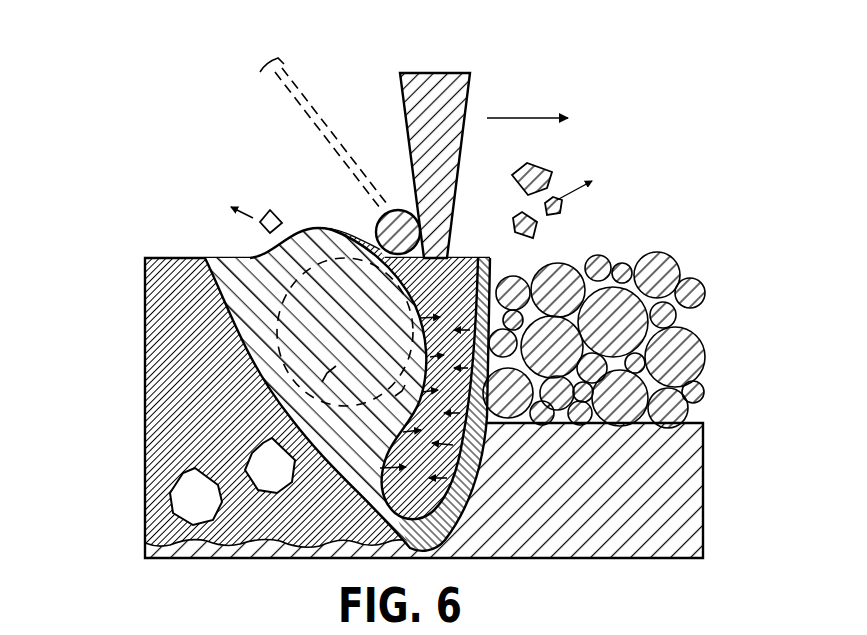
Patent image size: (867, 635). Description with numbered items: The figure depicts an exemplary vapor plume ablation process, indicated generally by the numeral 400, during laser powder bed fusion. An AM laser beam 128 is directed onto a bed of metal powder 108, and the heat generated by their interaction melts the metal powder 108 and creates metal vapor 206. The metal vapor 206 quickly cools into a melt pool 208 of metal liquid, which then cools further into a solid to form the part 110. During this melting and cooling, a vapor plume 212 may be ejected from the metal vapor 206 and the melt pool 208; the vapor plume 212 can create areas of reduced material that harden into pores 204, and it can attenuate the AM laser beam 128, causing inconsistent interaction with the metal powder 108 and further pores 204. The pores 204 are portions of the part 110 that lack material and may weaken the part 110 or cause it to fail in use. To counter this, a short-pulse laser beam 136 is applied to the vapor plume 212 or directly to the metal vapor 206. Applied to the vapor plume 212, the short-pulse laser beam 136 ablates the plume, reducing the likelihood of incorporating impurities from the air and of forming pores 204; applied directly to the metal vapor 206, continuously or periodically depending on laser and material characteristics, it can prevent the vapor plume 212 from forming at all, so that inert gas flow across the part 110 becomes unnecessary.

The machining process 400 is at (140, 120).
The short-pulse laser beam 136 is at (298, 90).
The AM laser beam 128 is at (435, 73).
The vapor plume 212 is at (398, 210).
The metal vapor 206 is at (447, 258).
The metal powder 108 is at (695, 240).
The melt pool 208 is at (222, 262).
The part 110 is at (168, 385).
The pores 204 is at (190, 507).